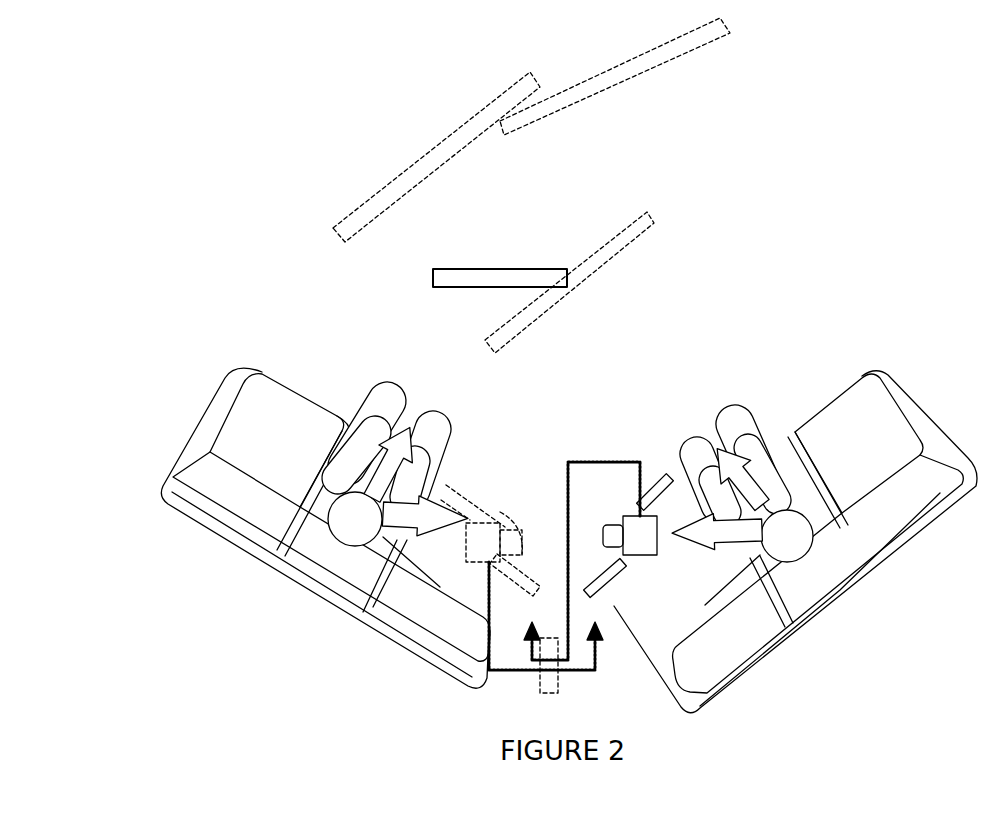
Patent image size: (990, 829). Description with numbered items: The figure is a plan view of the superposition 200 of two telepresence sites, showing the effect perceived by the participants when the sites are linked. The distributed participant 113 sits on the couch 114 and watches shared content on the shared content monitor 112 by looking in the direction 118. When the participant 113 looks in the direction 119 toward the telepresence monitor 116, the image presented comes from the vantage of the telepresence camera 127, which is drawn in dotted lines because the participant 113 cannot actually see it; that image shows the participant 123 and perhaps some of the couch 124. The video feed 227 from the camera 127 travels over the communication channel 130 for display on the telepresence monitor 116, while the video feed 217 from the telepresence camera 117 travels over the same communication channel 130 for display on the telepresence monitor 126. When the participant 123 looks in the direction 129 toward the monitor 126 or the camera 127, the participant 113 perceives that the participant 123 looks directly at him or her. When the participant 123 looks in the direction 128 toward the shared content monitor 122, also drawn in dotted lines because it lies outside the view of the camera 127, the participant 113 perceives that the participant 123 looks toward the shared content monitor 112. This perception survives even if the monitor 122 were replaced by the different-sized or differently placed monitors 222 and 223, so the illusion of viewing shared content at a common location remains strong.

The superposition 200 is at (234, 234).
The shared content monitor 112 is at (483, 287).
The distributed participant 113 is at (396, 388).
The couch 114 is at (257, 372).
The telepresence monitor 116 is at (662, 478).
The telepresence camera 117 is at (621, 520).
The direction 118 is at (390, 463).
The direction 119 is at (425, 516).
The content monitor 122 is at (607, 260).
The distributed participant 123 is at (690, 440).
The couch 124 is at (847, 387).
The telepresence monitor 126 is at (460, 487).
The telepresence camera 127 is at (490, 520).
The direction 128 is at (739, 477).
The direction 129 is at (716, 531).
The communication channel 130 is at (555, 690).
The video feed 217 is at (617, 462).
The monitor 222 is at (437, 170).
The monitor 223 is at (608, 89).
The video feed 227 is at (523, 673).